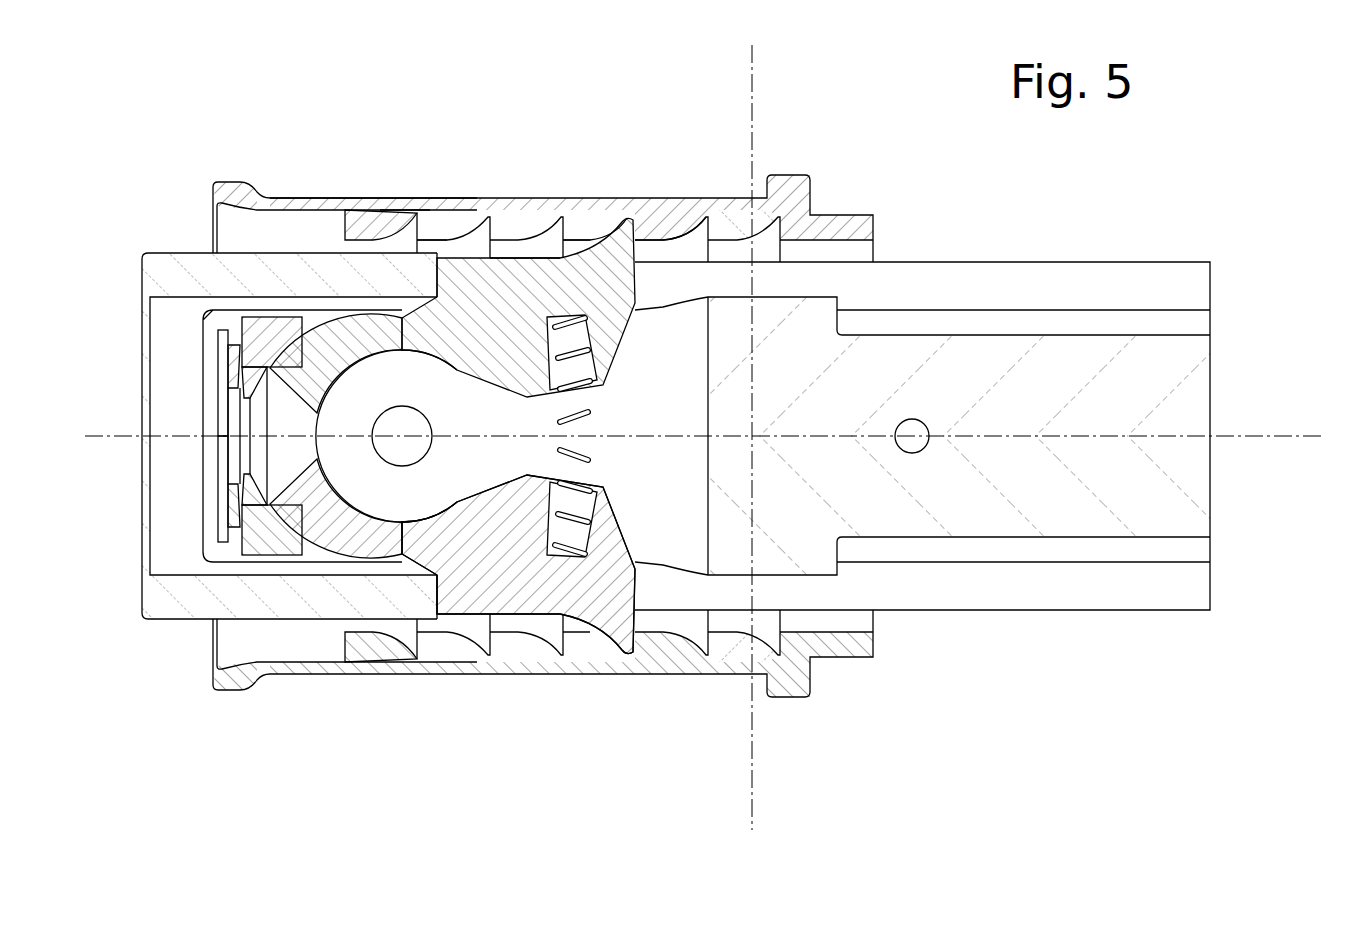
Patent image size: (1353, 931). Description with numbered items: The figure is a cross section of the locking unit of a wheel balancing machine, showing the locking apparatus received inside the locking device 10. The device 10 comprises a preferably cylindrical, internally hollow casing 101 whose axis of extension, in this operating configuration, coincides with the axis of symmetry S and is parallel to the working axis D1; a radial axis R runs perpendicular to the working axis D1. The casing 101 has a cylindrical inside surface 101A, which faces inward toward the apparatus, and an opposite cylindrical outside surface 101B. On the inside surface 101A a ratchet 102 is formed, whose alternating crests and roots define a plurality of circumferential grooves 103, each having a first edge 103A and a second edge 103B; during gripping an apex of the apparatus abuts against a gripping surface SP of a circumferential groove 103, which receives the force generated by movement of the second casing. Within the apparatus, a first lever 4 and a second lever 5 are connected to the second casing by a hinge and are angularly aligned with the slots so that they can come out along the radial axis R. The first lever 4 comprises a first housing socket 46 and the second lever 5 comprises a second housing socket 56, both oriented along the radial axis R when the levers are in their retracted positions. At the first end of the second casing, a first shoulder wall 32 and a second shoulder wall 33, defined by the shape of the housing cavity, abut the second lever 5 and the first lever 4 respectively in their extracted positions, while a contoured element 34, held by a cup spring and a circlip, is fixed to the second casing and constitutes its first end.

The first lever 4 is at (527, 290).
The second lever 5 is at (513, 595).
The locking device 10 is at (368, 222).
The first shoulder wall 32 is at (260, 355).
The second shoulder wall 33 is at (265, 498).
The contoured element 34 is at (224, 388).
The first housing socket 46 is at (575, 375).
The second housing socket 56 is at (575, 548).
The casing 101 is at (352, 200).
The cylindrical inside surface 101A is at (401, 200).
The cylindrical outside surface 101B is at (435, 240).
The ratchet 102 is at (688, 235).
The circumferential grooves 103 is at (505, 222).
The first edge 103A is at (595, 240).
The second edge 103B is at (570, 250).
The gripping surface SP is at (663, 220).
The radial axis R is at (752, 760).
The working axis D1 is at (1285, 425).